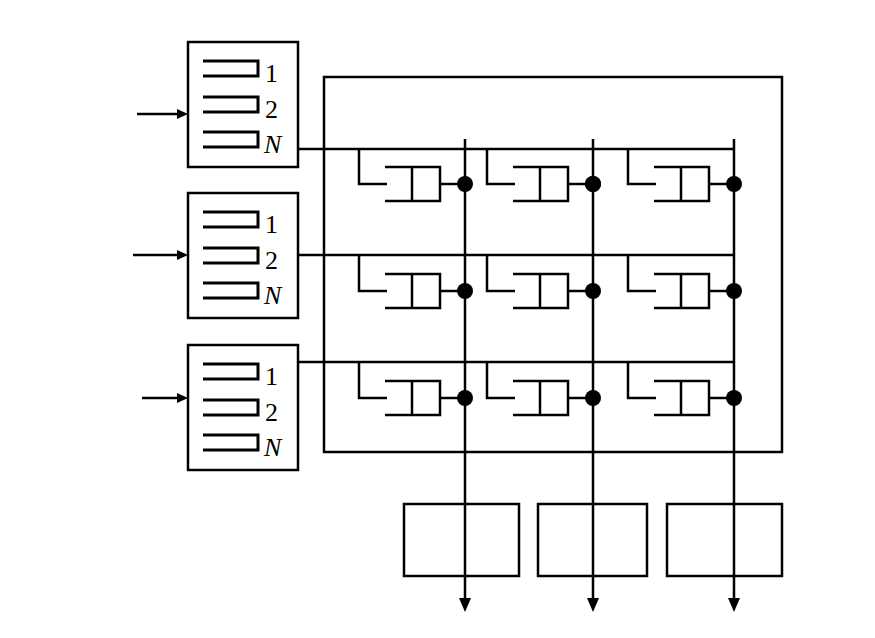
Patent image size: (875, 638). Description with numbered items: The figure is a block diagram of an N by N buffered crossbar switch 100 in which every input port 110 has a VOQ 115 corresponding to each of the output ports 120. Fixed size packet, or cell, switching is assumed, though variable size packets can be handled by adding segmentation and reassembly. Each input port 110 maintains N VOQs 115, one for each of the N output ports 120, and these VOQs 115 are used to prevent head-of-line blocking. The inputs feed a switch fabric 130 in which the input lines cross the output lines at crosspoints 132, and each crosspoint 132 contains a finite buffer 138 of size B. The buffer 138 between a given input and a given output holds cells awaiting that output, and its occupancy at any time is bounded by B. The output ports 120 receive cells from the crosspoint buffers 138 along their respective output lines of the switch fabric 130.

The buffered crossbar switch 100 is at (236, 540).
The input port 110 is at (97, 420).
The VOQ 115 is at (236, 150).
The output port 120 is at (803, 548).
The switch fabric 130 is at (782, 133).
The crosspoint 132 is at (598, 187).
The finite buffer 138 is at (542, 166).